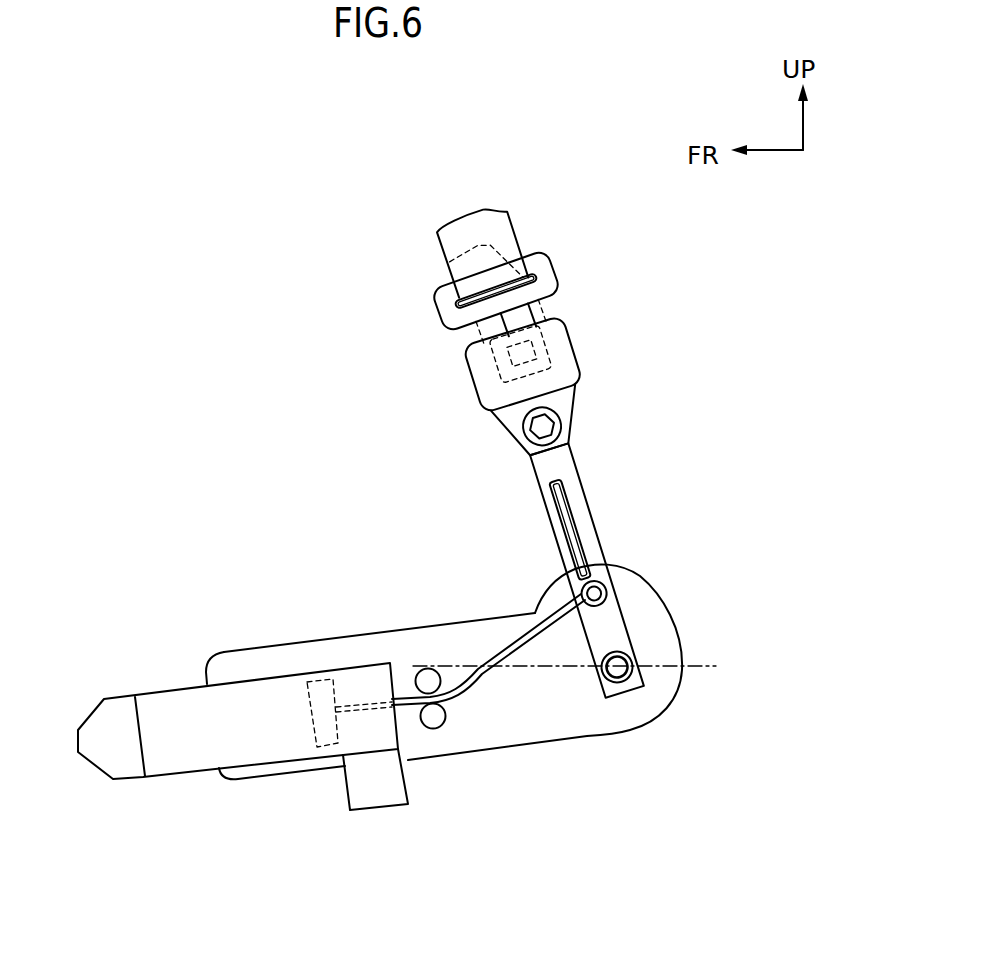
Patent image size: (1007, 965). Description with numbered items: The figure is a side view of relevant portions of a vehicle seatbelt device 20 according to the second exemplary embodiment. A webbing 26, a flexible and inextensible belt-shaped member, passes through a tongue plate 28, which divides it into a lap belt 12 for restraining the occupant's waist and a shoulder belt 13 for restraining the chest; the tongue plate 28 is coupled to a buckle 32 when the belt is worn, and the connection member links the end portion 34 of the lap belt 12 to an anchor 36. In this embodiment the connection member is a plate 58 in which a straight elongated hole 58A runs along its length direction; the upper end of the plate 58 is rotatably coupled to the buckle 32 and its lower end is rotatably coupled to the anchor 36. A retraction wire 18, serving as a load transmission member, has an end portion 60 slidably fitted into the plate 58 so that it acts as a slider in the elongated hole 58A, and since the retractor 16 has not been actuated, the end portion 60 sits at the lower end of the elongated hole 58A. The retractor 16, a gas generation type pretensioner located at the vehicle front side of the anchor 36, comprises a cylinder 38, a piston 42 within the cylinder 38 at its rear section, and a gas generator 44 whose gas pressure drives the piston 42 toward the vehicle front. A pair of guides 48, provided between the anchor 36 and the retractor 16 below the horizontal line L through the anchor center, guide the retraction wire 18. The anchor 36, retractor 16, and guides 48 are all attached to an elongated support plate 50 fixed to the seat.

The vehicle seatbelt device 20 is at (160, 188).
The webbing 26 is at (313, 170).
The shoulder belt 13 is at (441, 248).
The lap belt 12 is at (416, 271).
The end portion 34 is at (698, 282).
The tongue plate 28 is at (566, 271).
The buckle 32 is at (568, 356).
The plate 58 is at (587, 460).
The elongated hole 58A is at (578, 540).
The end portion 60 is at (607, 566).
The anchor 36 is at (608, 684).
The retractor 16 is at (248, 660).
The support plate 50 is at (413, 627).
The cylinder 38 is at (175, 690).
The piston 42 is at (307, 681).
The gas generator 44 is at (375, 808).
The guides 48 is at (442, 683).
The retraction wire 18 is at (520, 633).
The horizontal line L is at (700, 666).